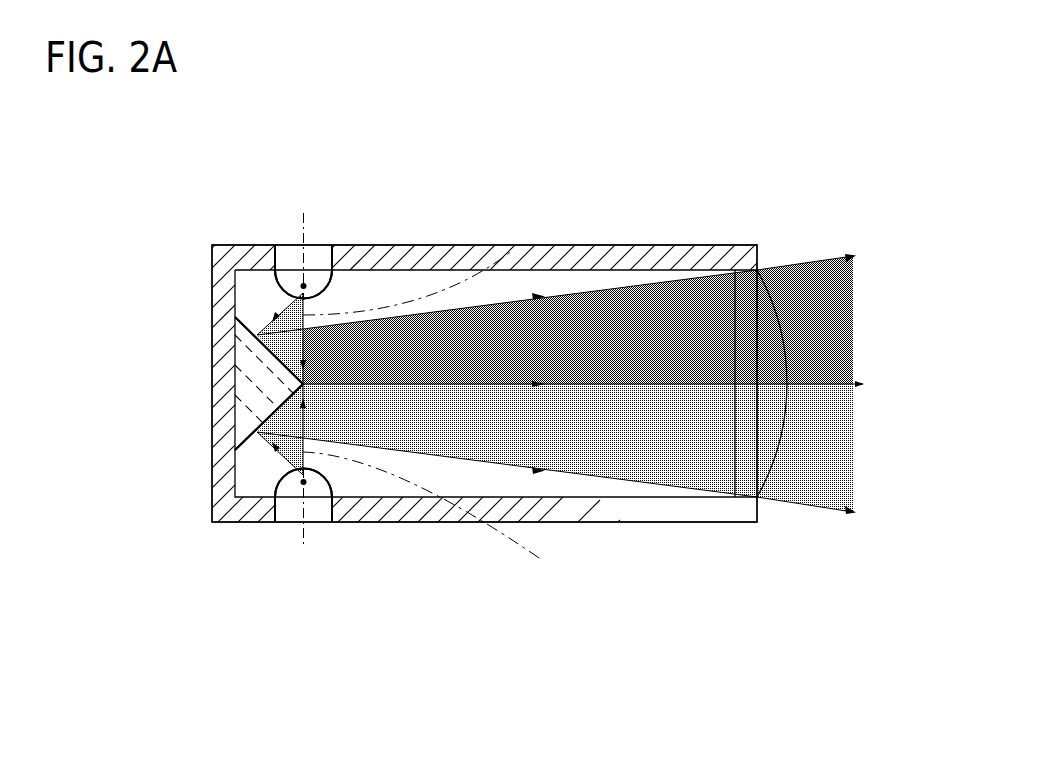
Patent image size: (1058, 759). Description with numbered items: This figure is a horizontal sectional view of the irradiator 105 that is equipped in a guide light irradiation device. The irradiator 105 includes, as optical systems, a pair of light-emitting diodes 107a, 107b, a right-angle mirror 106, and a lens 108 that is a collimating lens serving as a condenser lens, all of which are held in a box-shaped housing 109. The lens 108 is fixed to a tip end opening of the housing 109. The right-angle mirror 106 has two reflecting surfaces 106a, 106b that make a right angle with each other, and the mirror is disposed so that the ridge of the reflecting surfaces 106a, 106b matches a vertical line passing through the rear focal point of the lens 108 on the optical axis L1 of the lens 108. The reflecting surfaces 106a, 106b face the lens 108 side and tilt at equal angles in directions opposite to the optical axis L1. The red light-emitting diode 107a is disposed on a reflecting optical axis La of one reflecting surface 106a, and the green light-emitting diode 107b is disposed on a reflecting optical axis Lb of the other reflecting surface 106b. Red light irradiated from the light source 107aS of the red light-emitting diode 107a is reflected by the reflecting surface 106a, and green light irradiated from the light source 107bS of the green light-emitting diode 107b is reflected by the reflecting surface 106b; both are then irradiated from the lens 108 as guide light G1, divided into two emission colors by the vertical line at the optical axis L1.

The irradiator 105 is at (178, 232).
The right-angle mirror 106 is at (243, 368).
The reflecting surface 106a is at (240, 318).
The reflecting surface 106b is at (237, 452).
The red light-emitting diode 107a is at (315, 267).
The light source 107aS is at (307, 285).
The green light-emitting diode 107b is at (317, 505).
The light source 107bS is at (327, 489).
The lens 108 is at (758, 268).
The housing 109 is at (556, 254).
The reflecting optical axis La is at (511, 253).
The reflecting optical axis Lb is at (444, 525).
The optical axis L1 is at (609, 391).
The guide light G1 is at (857, 300).